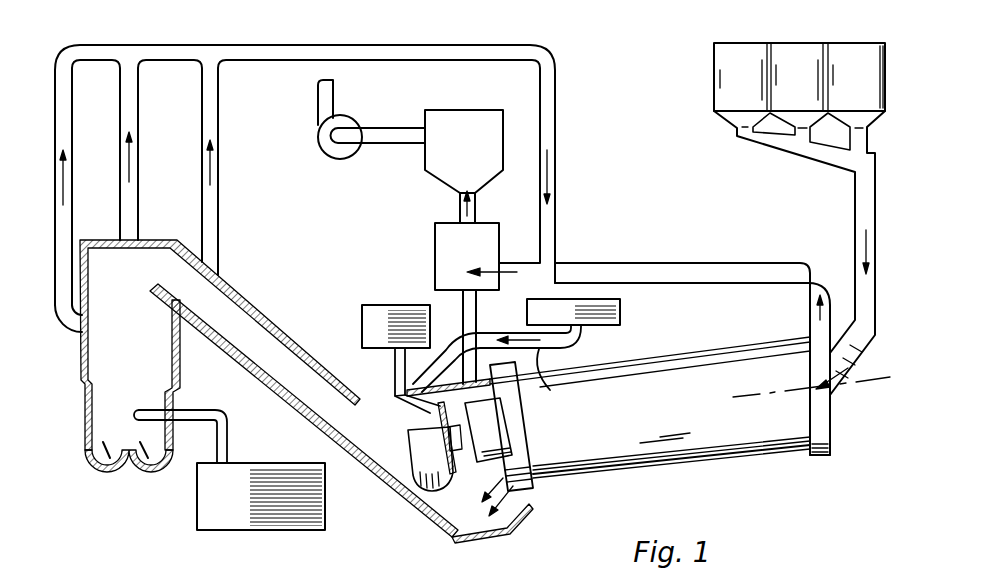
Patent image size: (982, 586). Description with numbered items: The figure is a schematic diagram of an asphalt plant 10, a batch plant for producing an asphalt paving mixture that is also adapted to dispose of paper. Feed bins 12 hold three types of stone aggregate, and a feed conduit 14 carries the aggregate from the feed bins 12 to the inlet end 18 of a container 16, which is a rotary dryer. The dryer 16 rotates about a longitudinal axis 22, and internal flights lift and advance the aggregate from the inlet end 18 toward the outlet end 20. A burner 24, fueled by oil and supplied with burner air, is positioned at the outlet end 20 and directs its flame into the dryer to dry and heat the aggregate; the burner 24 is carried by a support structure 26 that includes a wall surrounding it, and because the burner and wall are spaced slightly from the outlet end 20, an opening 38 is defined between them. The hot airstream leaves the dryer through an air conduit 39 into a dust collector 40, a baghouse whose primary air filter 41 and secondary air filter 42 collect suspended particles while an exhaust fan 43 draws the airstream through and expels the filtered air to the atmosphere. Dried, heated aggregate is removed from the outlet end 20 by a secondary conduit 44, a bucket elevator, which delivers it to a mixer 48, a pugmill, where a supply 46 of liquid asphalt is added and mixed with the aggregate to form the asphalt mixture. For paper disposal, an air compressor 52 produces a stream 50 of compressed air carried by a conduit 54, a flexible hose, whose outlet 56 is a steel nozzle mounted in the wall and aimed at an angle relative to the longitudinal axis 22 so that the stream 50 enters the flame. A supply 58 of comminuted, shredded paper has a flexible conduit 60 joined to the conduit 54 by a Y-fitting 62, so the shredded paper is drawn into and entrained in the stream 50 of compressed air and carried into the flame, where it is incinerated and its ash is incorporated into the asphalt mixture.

The asphalt plant 10 is at (874, 510).
The feed bins 12 is at (757, 55).
The feed conduit 14 is at (865, 186).
The container 16 is at (667, 410).
The inlet end 18 is at (794, 455).
The outlet end 20 is at (540, 491).
The longitudinal axis 22 is at (867, 382).
The burner 24 is at (420, 456).
The support structure 26 is at (465, 480).
The opening 38 is at (456, 538).
The air conduit 39 is at (713, 262).
The dust collector 40 is at (410, 191).
The primary air filter 41 is at (481, 256).
The secondary air filter 42 is at (476, 152).
The exhaust fan 43 is at (316, 128).
The secondary conduit 44 is at (280, 383).
The supply of asphalt 46 is at (197, 410).
The mixer 48 is at (100, 437).
The stream of compressed air 50 is at (403, 358).
The air compressor 52 is at (400, 305).
The conduit 54 is at (400, 408).
The outlet 56 is at (461, 398).
The supply of paper 58 is at (604, 344).
The conduit 60 is at (550, 390).
The Y-fitting 62 is at (437, 392).